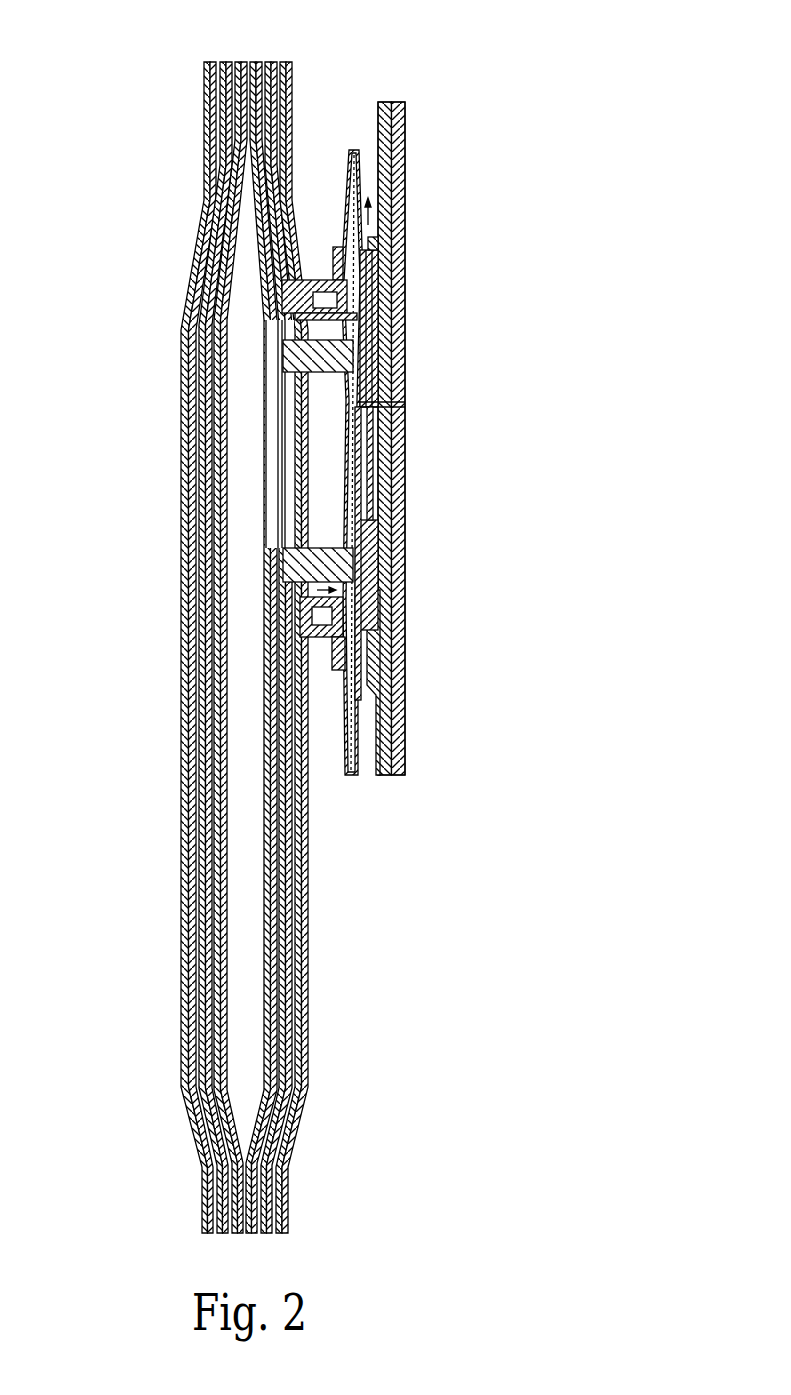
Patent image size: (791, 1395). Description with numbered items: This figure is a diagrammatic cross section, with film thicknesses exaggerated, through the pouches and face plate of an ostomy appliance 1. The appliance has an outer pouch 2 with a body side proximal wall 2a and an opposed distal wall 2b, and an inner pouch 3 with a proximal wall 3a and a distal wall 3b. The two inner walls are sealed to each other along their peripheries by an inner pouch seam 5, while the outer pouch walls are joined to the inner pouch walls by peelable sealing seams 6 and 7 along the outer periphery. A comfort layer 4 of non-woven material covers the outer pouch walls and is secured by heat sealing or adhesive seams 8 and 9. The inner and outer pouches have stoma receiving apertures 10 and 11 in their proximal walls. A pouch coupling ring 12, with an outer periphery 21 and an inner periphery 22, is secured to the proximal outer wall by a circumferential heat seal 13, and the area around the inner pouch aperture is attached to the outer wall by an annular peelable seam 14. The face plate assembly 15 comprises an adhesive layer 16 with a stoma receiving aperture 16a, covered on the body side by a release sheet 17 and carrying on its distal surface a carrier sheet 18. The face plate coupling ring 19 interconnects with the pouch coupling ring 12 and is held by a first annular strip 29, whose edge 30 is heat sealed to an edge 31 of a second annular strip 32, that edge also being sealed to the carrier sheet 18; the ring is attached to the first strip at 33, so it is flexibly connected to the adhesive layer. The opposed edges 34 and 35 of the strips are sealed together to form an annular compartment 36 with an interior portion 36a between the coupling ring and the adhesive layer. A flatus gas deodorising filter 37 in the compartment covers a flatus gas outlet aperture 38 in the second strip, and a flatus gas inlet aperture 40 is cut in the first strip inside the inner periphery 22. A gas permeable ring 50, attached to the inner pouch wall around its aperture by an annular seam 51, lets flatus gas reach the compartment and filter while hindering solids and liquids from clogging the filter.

The ostomy appliance 1 is at (160, 1138).
The outer pouch 2 is at (195, 400).
The proximal wall 2a is at (305, 885).
The distal wall 2b is at (197, 790).
The inner pouch 3 is at (205, 300).
The proximal wall 3a is at (288, 1037).
The distal wall 3b is at (215, 1005).
The comfort layer 4 is at (187, 893).
The inner pouch seam 5 is at (222, 156).
The peelable sealing seam 6 is at (278, 62).
The peelable sealing seam 7 is at (200, 205).
The heat sealing or adhesive seam 8 is at (280, 158).
The heat sealing or adhesive seam 9 is at (215, 172).
The stoma receiving aperture 10 is at (270, 457).
The stoma receiving aperture 11 is at (288, 512).
The pouch coupling ring 12 is at (313, 280).
The circumferential heat seal 13 is at (300, 603).
The annular peelable seam 14 is at (332, 645).
The face plate assembly 15 is at (395, 102).
The adhesive layer 16 is at (405, 305).
The stoma receiving aperture 16a is at (405, 426).
The release sheet 17 is at (405, 395).
The carrier sheet 18 is at (355, 600).
The face plate coupling ring 19 is at (380, 648).
The outer periphery 21 is at (378, 693).
The inner periphery 22 is at (358, 583).
The first annular strip 29 is at (405, 297).
The edge 30 is at (405, 312).
The edge 31 is at (375, 512).
The second annular strip 32 is at (355, 190).
The heat seal attachment 33 is at (405, 366).
The edge 34 is at (347, 776).
The edge 35 is at (405, 760).
The annular compartment 36 is at (405, 390).
The interior portion 36a is at (368, 622).
The flatus gas deodorising filter 37 is at (387, 255).
The flatus gas outlet aperture 38 is at (378, 237).
The flatus gas inlet aperture 40 is at (340, 598).
The ring 50 is at (320, 546).
The annular seam 51 is at (282, 358).